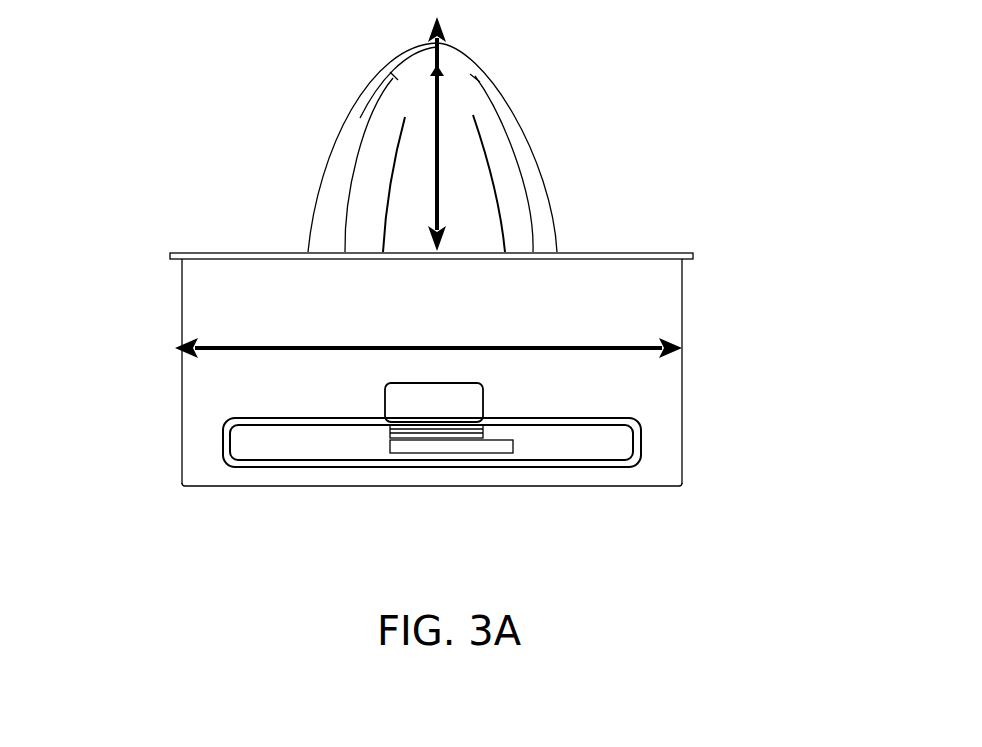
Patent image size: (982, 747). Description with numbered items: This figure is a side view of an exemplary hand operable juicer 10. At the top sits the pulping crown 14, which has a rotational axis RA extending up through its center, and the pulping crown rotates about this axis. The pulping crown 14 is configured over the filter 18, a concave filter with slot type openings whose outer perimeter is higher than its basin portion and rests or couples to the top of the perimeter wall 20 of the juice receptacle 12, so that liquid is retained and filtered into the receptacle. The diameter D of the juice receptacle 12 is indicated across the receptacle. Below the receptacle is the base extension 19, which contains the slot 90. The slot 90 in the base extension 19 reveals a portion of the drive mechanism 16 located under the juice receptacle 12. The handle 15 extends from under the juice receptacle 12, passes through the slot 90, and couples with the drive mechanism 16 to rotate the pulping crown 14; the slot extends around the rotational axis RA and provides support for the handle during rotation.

The hand operable juicer 10 is at (188, 238).
The juice receptacle 12 is at (637, 313).
The pulping crown 14 is at (480, 147).
The handle 15 is at (393, 434).
The drive mechanism 16 is at (430, 447).
The filter 18 is at (628, 252).
The base extension 19 is at (197, 460).
The perimeter wall 20 is at (180, 341).
The slot 90 is at (552, 440).
The rotational axis RA is at (357, 117).
The diameter D is at (643, 358).